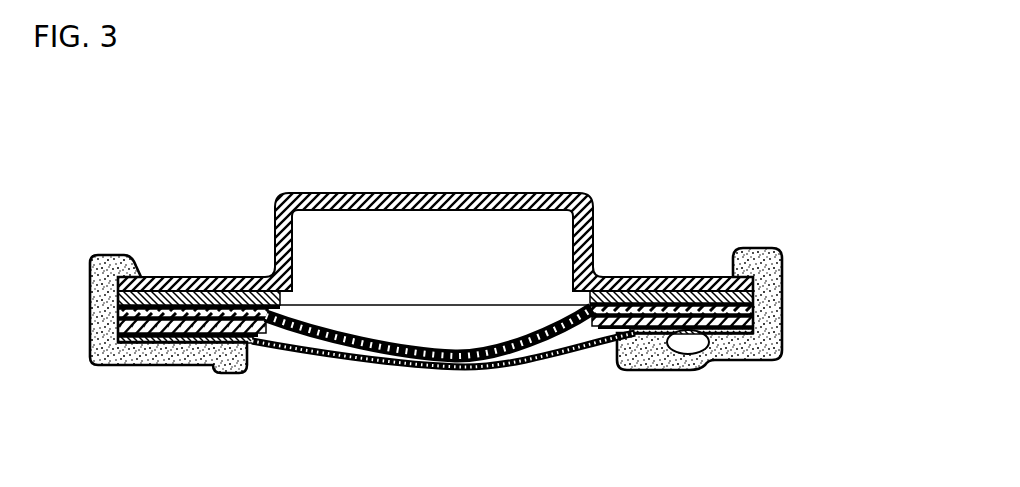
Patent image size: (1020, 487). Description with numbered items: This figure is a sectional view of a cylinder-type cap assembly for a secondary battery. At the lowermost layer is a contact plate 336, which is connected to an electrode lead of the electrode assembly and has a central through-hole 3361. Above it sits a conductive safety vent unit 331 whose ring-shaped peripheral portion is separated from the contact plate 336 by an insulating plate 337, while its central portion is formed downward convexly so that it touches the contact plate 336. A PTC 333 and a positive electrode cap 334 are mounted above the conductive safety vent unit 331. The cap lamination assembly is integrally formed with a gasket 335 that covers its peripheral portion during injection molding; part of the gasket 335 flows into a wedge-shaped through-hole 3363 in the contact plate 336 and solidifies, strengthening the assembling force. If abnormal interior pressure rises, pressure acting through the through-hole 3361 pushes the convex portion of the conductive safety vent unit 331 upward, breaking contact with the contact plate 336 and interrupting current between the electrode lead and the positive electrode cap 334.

The conductive safety vent unit 331 is at (490, 363).
The PTC 333 is at (665, 277).
The positive electrode cap 334 is at (410, 192).
The gasket 335 is at (785, 290).
The contact plate 336 is at (293, 353).
The through-hole 3361 is at (322, 362).
The wedge-shaped through-hole 3363 is at (708, 357).
The insulating plate 337 is at (148, 363).